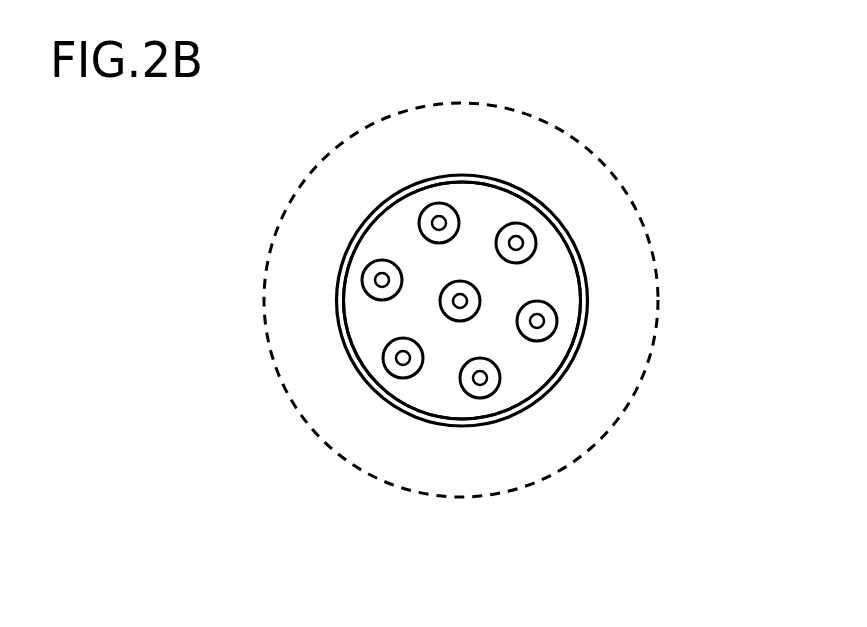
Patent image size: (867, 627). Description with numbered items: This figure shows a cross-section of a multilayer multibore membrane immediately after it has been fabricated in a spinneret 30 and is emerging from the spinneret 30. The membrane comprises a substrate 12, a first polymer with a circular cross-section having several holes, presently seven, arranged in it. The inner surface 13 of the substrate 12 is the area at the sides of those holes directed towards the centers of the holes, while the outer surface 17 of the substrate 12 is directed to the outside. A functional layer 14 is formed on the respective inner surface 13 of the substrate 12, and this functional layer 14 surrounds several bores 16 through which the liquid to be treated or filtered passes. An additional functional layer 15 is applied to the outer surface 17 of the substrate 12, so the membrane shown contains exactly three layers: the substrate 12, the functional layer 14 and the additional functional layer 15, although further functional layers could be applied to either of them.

The spinneret 30 is at (534, 148).
The additional functional layer 15 is at (543, 398).
The outer surface 17 is at (343, 257).
The substrate 12 is at (557, 350).
The inner surface 13 is at (367, 295).
The functional layer 14 is at (527, 261).
The bore 16 is at (518, 244).